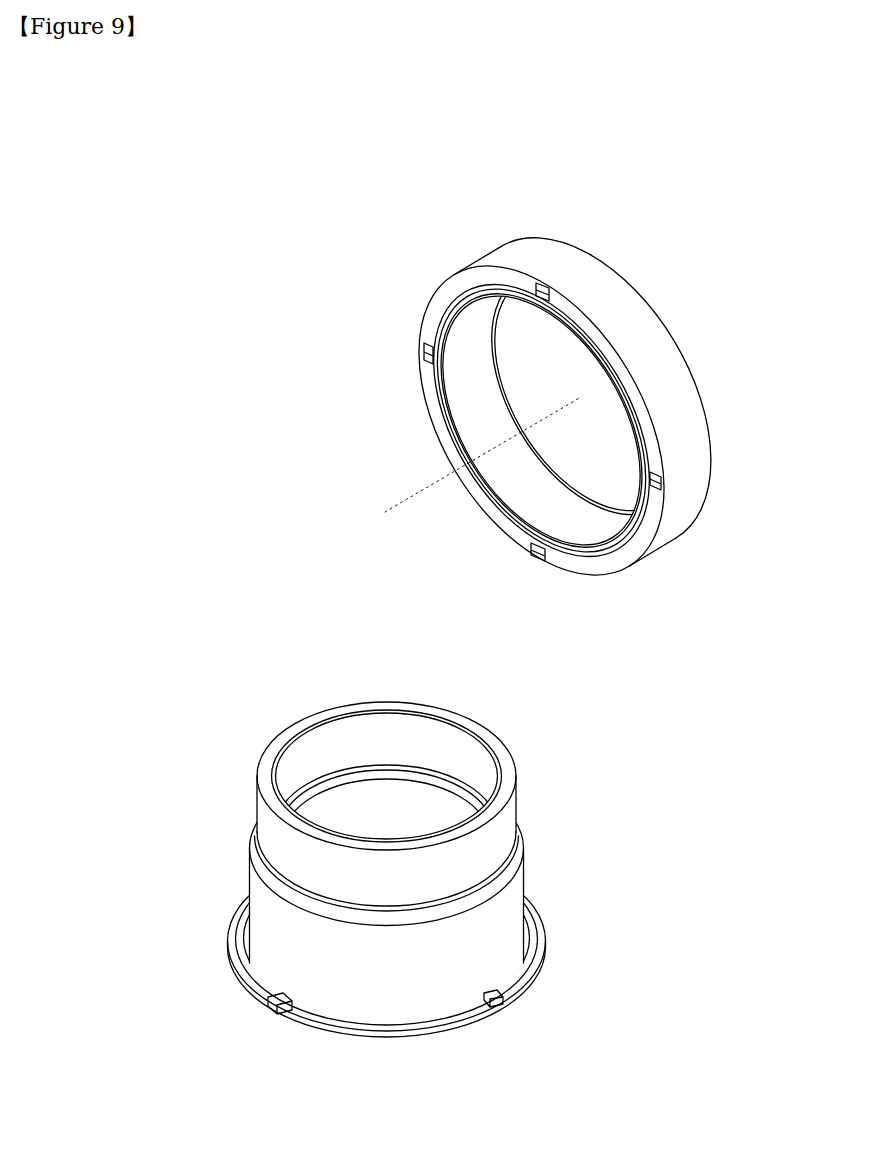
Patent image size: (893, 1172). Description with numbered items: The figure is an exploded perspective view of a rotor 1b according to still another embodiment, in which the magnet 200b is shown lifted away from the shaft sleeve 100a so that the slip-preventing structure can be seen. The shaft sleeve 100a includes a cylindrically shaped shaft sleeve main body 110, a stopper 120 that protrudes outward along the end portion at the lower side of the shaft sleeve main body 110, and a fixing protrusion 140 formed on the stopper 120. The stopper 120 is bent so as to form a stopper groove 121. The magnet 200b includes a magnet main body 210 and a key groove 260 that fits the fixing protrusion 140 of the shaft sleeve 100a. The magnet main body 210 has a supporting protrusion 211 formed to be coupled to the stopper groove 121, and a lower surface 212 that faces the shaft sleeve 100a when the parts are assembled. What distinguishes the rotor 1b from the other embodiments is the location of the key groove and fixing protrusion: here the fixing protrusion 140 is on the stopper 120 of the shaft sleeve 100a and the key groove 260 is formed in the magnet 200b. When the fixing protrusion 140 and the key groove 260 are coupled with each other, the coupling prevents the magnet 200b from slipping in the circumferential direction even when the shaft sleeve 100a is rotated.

The rotor 1b is at (126, 178).
The magnet 200b is at (562, 381).
The magnet main body 210 is at (700, 480).
The supporting protrusion 211 is at (450, 303).
The lower surface 212 is at (494, 522).
The key groove 260 is at (540, 283).
The shaft sleeve 100a is at (429, 911).
The shaft sleeve main body 110 is at (510, 918).
The stopper 120 is at (542, 940).
The stopper groove 121 is at (538, 973).
The fixing protrusion 140 is at (520, 1003).